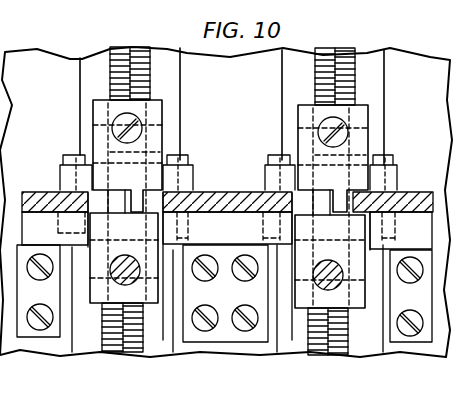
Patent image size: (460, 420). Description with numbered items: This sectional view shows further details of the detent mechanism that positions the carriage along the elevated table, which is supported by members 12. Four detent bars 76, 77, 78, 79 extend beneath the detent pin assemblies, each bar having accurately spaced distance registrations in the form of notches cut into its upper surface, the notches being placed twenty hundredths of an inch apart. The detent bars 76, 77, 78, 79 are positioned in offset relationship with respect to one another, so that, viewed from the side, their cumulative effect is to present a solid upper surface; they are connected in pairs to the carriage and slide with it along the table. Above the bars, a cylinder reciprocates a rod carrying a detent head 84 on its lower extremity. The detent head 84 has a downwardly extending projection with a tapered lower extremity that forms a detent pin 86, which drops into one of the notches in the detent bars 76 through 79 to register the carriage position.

The members 12 is at (84, 121).
The detent bar 76 is at (355, 71).
The detent bar 77 is at (316, 81).
The detent bar 78 is at (150, 68).
The detent bar 79 is at (110, 77).
The detent head 84 is at (153, 142).
The detent pin 86 is at (78, 176).